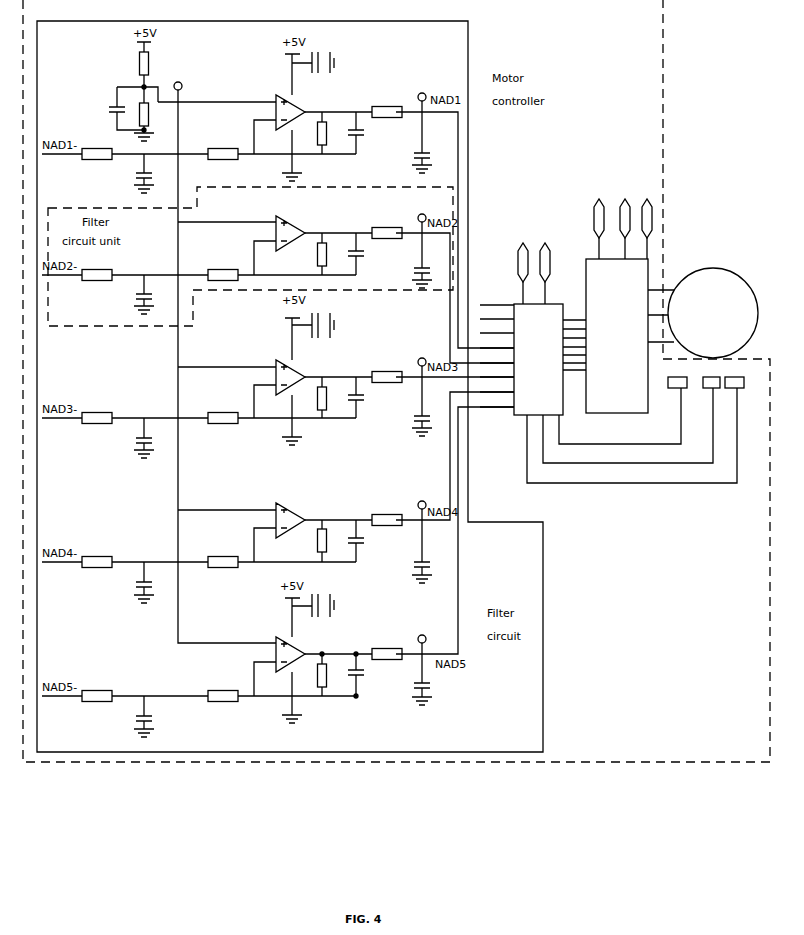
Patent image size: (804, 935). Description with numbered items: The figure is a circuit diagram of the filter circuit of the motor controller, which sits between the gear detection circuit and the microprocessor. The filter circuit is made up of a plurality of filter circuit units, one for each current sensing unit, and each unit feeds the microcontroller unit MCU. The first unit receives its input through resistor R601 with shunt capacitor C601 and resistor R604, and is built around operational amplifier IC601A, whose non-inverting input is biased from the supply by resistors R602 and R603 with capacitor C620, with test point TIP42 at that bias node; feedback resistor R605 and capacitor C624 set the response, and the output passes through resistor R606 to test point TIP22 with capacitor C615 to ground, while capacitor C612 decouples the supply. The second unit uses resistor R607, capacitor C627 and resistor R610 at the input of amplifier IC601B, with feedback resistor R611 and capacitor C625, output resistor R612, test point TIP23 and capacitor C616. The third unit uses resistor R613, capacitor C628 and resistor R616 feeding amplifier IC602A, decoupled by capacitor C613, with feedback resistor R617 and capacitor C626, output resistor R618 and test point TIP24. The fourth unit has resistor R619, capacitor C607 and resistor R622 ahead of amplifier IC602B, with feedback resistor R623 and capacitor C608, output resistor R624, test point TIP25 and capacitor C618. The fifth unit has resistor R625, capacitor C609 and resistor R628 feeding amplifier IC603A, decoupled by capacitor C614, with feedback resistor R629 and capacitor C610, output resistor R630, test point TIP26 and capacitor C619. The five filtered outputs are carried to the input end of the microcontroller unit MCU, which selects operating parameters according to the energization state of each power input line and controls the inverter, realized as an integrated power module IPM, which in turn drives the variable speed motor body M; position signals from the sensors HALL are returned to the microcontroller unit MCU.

The pull-up resistor R602 is at (160, 72).
The resistor R603 is at (157, 122).
The capacitor C620 is at (110, 108).
The test point TIP42 is at (197, 86).
The input resistor R601 is at (98, 147).
The resistor R604 is at (224, 147).
The filter capacitor C601 is at (127, 173).
The operational amplifier IC601A is at (307, 106).
The decoupling capacitor C612 is at (322, 54).
The resistor R605 is at (337, 133).
The capacitor C624 is at (369, 133).
The output resistor R606 is at (386, 105).
The test point TIP22 is at (425, 91).
The capacitor C615 is at (409, 142).
The input resistor R607 is at (98, 268).
The resistor R610 is at (224, 268).
The filter capacitor C627 is at (127, 294).
The operational amplifier IC601B is at (302, 227).
The resistor R611 is at (307, 254).
The capacitor C625 is at (369, 254).
The output resistor R612 is at (387, 226).
The test point TIP23 is at (425, 213).
The capacitor C616 is at (407, 334).
The input resistor R613 is at (98, 411).
The resistor R616 is at (224, 411).
The filter capacitor C628 is at (127, 438).
The operational amplifier IC602A is at (307, 372).
The decoupling capacitor C613 is at (320, 316).
The resistor R617 is at (337, 397).
The capacitor C626 is at (369, 397).
The output resistor R618 is at (386, 370).
The test point TIP24 is at (425, 356).
The input resistor R619 is at (98, 555).
The resistor R622 is at (224, 555).
The filter capacitor C607 is at (127, 582).
The operational amplifier IC602B is at (302, 514).
The resistor R623 is at (306, 541).
The capacitor C608 is at (369, 541).
The output resistor R624 is at (386, 513).
The test point TIP25 is at (425, 499).
The capacitor C618 is at (407, 551).
The input resistor R625 is at (98, 689).
The resistor R628 is at (224, 689).
The filter capacitor C609 is at (127, 716).
The operational amplifier IC603A is at (307, 649).
The decoupling capacitor C614 is at (324, 595).
The resistor R629 is at (337, 674).
The capacitor C610 is at (369, 675).
The output resistor R630 is at (386, 647).
The test point TIP26 is at (425, 633).
The capacitor C619 is at (404, 683).
The microcontroller unit MCU is at (533, 320).
The integrated power module IPM is at (623, 295).
The variable speed motor body M is at (703, 313).
The hall sensors HALL is at (645, 423).